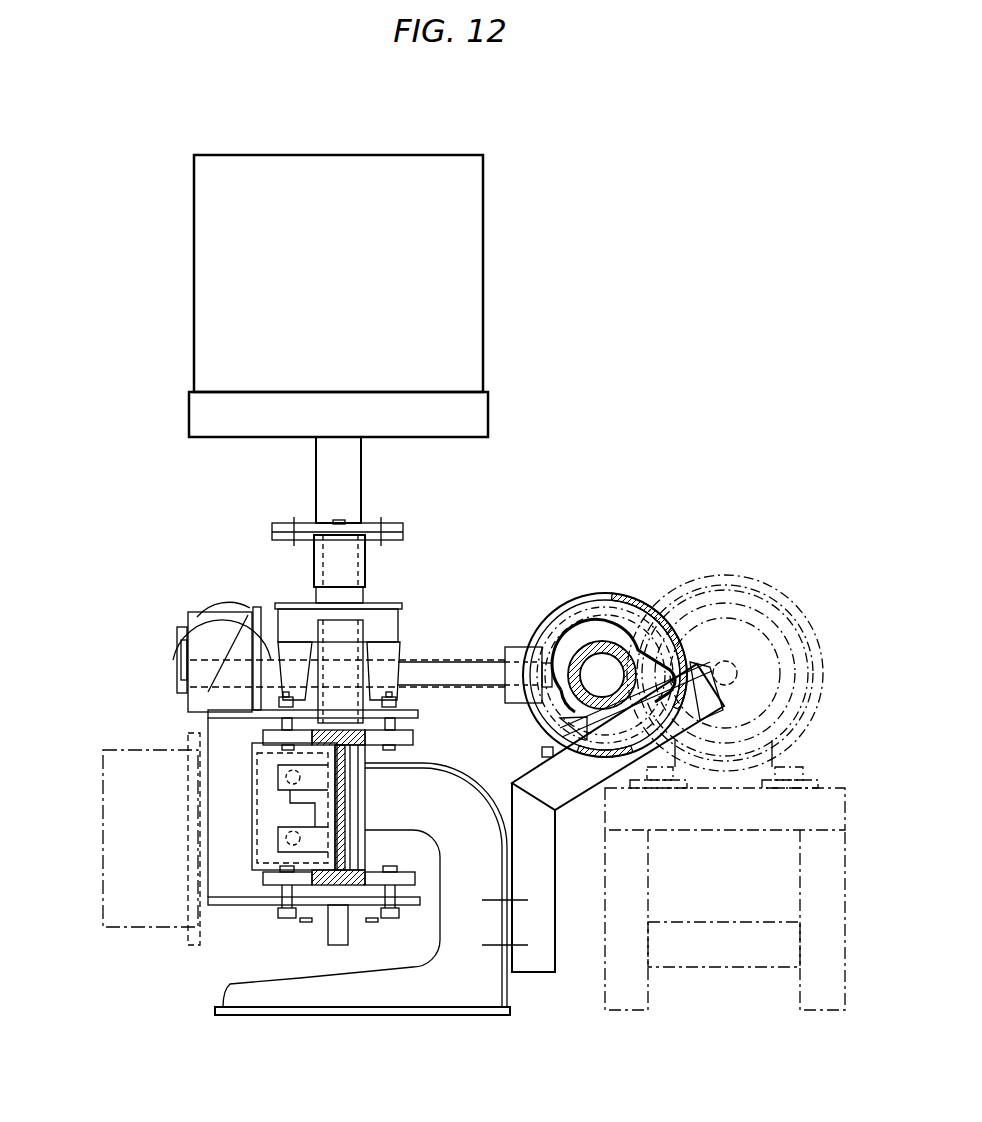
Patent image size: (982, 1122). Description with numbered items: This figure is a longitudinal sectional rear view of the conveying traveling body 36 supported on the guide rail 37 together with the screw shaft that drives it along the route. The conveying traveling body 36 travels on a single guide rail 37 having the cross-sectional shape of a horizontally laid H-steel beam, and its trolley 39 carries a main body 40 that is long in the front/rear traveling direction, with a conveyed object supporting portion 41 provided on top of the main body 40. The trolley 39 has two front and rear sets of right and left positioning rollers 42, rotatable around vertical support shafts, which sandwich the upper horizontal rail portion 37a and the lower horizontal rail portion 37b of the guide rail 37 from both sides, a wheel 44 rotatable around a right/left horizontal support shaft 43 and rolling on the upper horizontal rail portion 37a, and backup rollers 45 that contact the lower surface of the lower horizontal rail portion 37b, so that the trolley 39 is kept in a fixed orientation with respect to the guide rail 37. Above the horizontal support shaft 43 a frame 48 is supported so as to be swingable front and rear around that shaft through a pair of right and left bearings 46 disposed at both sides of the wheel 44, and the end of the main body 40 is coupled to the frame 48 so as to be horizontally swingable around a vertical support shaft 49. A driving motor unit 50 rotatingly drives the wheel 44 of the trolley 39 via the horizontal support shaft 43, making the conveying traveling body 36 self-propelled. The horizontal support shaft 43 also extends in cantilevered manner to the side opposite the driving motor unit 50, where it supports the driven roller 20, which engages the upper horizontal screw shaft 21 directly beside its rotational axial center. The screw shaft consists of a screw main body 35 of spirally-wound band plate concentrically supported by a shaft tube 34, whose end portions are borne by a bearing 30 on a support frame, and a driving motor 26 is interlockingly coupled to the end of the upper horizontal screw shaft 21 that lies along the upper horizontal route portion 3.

The upper horizontal route portion 3 is at (320, 798).
The driven roller 20 is at (518, 655).
The upper horizontal screw shaft 21 is at (588, 592).
The driving motor 26 is at (802, 623).
The bearing 30 is at (530, 770).
The shaft tube 34 is at (615, 653).
The screw main body 35 is at (663, 617).
The conveying traveling body 36 is at (189, 410).
The guide rail 37 is at (335, 813).
The upper horizontal rail portion 37a is at (353, 758).
The lower horizontal rail portion 37b is at (340, 886).
The trolley 39 is at (206, 850).
The main body 40 is at (314, 567).
The conveyed object supporting portion 41 is at (447, 283).
The positioning rollers 42 is at (275, 738).
The right/left horizontal support shaft 43 is at (432, 668).
The wheel 44 is at (340, 637).
The backup rollers 45 is at (340, 935).
The bearings 46 is at (293, 675).
The frame 48 is at (296, 605).
The vertical support shaft 49 is at (339, 535).
The driving motor unit 50 is at (169, 638).